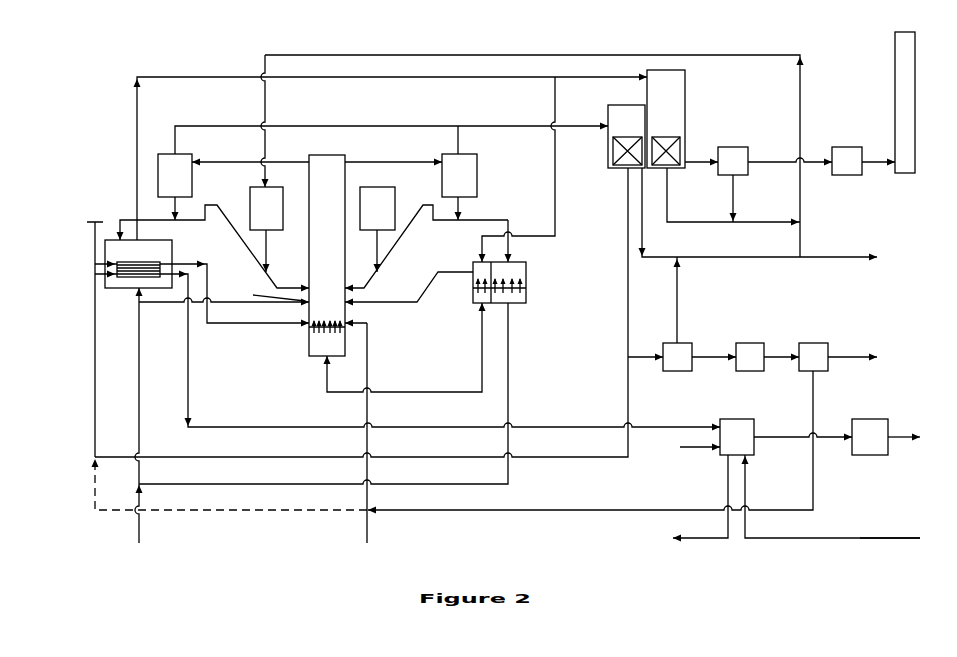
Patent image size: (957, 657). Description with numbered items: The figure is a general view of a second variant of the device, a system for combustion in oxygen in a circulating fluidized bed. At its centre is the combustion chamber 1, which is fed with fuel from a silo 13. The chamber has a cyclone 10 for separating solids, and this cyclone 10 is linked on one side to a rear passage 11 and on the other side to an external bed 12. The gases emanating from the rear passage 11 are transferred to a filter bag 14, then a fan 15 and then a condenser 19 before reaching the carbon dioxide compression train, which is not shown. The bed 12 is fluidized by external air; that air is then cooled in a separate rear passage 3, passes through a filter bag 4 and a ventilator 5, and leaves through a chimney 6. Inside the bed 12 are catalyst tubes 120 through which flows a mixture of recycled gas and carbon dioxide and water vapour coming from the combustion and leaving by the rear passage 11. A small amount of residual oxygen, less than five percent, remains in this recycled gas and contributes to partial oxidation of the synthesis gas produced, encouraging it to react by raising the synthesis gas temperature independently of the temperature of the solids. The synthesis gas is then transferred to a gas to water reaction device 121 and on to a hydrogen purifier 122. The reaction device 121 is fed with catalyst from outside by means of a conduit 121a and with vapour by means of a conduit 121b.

The combustion chamber 1 is at (327, 255).
The separate rear passage 3 is at (666, 119).
The filter bag 4 is at (733, 161).
The ventilator 5 is at (847, 161).
The chimney 6 is at (903, 70).
The cyclone 10 is at (317, 175).
The rear passage 11 is at (626, 136).
The external bed 12 is at (295, 302).
The silo 13 is at (377, 208).
The filter bag 14 is at (677, 357).
The fan 15 is at (750, 357).
The condenser 19 is at (813, 357).
The catalyst tubes 120 is at (125, 281).
The gas to water reaction device 121 is at (737, 437).
The conduit 121a is at (695, 441).
The conduit 121b is at (889, 529).
The hydrogen purifier 122 is at (870, 437).